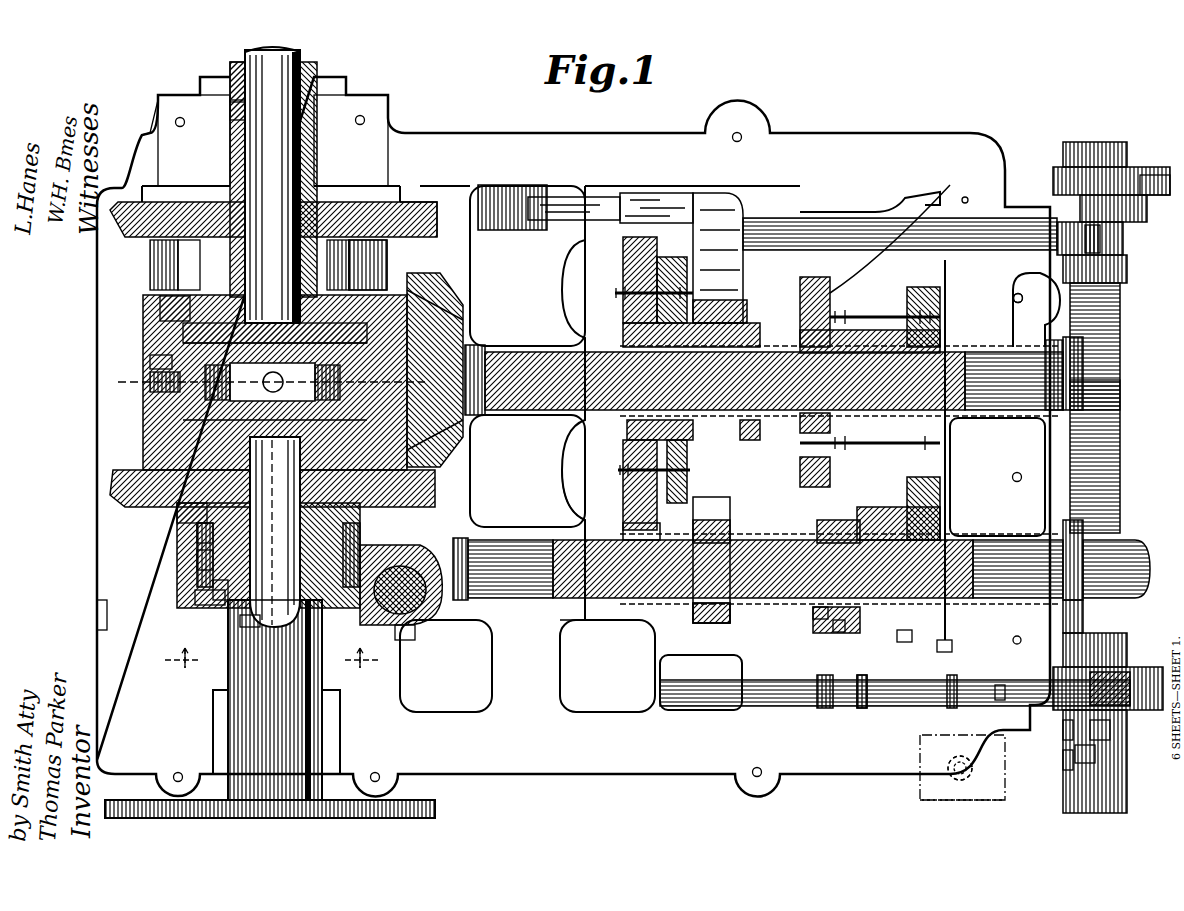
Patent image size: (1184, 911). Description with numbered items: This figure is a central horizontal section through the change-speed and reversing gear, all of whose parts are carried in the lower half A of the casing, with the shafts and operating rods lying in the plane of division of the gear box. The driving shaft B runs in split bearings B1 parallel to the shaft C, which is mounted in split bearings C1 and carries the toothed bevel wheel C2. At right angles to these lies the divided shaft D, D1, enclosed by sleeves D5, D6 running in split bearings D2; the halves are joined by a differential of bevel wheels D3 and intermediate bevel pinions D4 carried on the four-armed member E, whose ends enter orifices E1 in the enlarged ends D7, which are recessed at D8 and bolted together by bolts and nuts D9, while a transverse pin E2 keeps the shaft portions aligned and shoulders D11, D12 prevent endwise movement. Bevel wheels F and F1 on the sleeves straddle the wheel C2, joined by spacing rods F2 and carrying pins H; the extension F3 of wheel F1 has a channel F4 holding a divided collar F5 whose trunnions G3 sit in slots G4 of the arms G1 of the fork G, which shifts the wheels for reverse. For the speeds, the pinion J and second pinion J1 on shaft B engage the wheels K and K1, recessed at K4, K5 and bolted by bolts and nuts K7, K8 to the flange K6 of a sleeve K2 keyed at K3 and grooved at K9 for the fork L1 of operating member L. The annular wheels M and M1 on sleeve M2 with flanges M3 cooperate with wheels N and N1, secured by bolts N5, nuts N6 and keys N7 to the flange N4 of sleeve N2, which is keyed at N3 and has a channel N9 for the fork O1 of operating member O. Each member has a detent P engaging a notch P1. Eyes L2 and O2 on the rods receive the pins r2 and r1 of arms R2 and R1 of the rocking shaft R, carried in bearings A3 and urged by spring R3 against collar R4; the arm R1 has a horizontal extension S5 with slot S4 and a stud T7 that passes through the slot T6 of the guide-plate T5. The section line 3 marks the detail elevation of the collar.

The lower half of casing A is at (548, 158).
The bearings A3 is at (1060, 340).
The shaft B is at (1095, 548).
The split bearings B1 is at (1085, 530).
The shaft C is at (1085, 380).
The split bearings C1 is at (1050, 345).
The toothed bevel wheel C2 is at (505, 230).
The divided shaft D is at (200, 567).
The divided shaft D1 is at (275, 110).
The split bearings D2 is at (335, 125).
The bevel wheels D3 is at (205, 275).
The intermediate bevel pinions D4 is at (405, 285).
The sleeve D5 is at (380, 188).
The sleeve D6 is at (195, 510).
The enlarged end D7 is at (185, 335).
The recess D8 is at (175, 300).
The bolts and nuts D9 is at (395, 560).
The shoulder D11 is at (220, 195).
The shoulder D12 is at (233, 110).
The four-armed member E is at (140, 462).
The orifices E1 is at (150, 378).
The transverse pin E2 is at (150, 362).
The bevel wheel F is at (440, 200).
The bevel wheel F1 is at (200, 530).
The spacing rods F2 is at (148, 200).
The extension or sleeve F3 is at (230, 590).
The channel F4 is at (200, 560).
The divided collar F5 is at (97, 615).
The operating member or fork G is at (340, 630).
The arms G1 is at (240, 622).
The trunnion G3 is at (195, 597).
The slots G4 is at (400, 640).
The pins H is at (112, 225).
The pinion J is at (600, 620).
The second pinion J1 is at (693, 615).
The wheel K is at (580, 505).
The second wheel K1 is at (725, 530).
The sleeve K2 is at (625, 320).
The key K3 is at (745, 325).
The recess K4 is at (640, 490).
The recess K5 is at (690, 475).
The flange K6 is at (700, 295).
The bolts and nuts K7 is at (668, 300).
The bolts and nuts K8 is at (645, 300).
The groove K9 is at (790, 250).
The operating member L is at (898, 218).
The operating fork L1 is at (775, 220).
The eye L2 is at (1095, 240).
The annular wheel M is at (930, 300).
The annular wheel M1 is at (1010, 273).
The sleeve M2 is at (1090, 285).
The flanges M3 is at (960, 290).
The annular wheel N is at (860, 705).
The annular wheel N1 is at (905, 640).
The sleeve N2 is at (930, 520).
The key N3 is at (935, 540).
The shoulder or flange N4 is at (880, 455).
The bolts N5 is at (925, 480).
The nuts N6 is at (925, 500).
The keys N7 is at (945, 650).
The channel N9 is at (815, 615).
The operating member O is at (1000, 690).
The fork O1 is at (835, 630).
The eye O2 is at (1040, 645).
The spring-controlled detent P is at (805, 708).
The notch P1 is at (862, 708).
The rocking shaft R is at (1105, 428).
The arm R1 is at (1105, 735).
The arm R2 is at (1110, 142).
The spring R3 is at (1112, 395).
The collar R4 is at (1085, 615).
The pin r1 is at (1063, 730).
The pin r2 is at (1145, 175).
The slot S4 is at (1000, 775).
The horizontal extension S5 is at (1105, 760).
The guide-plate T5 is at (1005, 800).
The slot T6 is at (1063, 760).
The pin or stud T7 is at (1105, 785).
The section line 3 is at (271, 661).